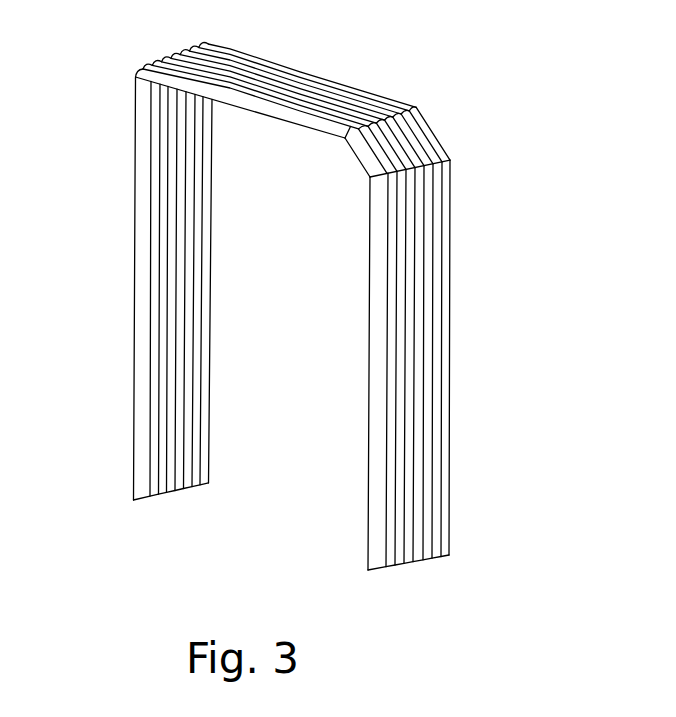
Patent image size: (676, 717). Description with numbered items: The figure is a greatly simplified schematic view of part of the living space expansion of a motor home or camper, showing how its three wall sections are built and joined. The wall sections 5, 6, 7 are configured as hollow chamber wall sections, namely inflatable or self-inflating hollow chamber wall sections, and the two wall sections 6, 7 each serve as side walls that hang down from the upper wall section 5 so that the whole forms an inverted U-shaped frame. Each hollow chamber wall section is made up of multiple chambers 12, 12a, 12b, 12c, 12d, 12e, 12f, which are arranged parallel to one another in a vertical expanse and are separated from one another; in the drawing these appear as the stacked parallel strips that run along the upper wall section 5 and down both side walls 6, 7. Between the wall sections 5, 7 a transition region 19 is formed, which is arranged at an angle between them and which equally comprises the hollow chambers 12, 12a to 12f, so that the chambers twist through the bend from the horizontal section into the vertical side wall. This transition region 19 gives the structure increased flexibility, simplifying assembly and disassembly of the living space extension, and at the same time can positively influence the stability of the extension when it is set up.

The wall section 5 is at (337, 86).
The transition region 19 is at (437, 123).
The wall section 7 is at (449, 413).
The wall section 6 is at (133, 340).
The chamber 12 is at (308, 341).
The chamber 12a is at (395, 566).
The chamber 12b is at (403, 565).
The chamber 12c is at (408, 564).
The chamber 12d is at (425, 527).
The chamber 12e is at (423, 511).
The chamber 12f is at (435, 493).